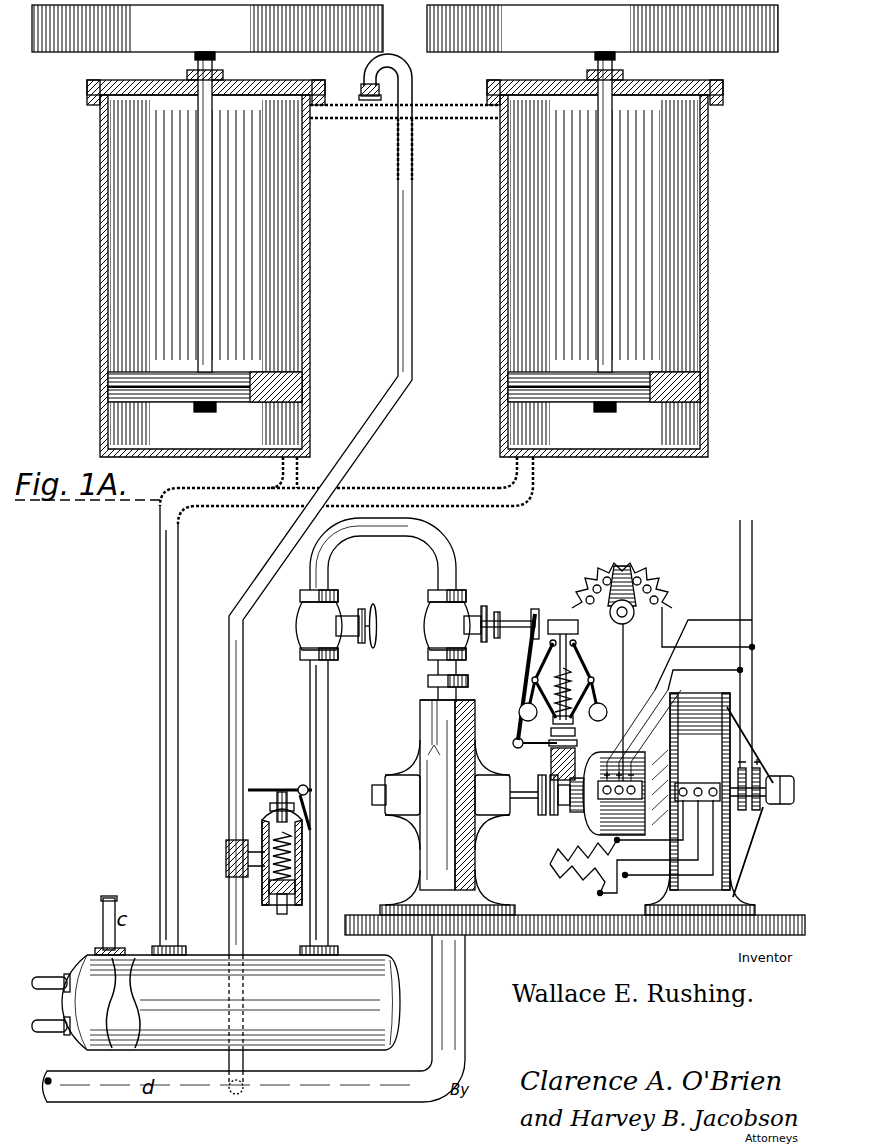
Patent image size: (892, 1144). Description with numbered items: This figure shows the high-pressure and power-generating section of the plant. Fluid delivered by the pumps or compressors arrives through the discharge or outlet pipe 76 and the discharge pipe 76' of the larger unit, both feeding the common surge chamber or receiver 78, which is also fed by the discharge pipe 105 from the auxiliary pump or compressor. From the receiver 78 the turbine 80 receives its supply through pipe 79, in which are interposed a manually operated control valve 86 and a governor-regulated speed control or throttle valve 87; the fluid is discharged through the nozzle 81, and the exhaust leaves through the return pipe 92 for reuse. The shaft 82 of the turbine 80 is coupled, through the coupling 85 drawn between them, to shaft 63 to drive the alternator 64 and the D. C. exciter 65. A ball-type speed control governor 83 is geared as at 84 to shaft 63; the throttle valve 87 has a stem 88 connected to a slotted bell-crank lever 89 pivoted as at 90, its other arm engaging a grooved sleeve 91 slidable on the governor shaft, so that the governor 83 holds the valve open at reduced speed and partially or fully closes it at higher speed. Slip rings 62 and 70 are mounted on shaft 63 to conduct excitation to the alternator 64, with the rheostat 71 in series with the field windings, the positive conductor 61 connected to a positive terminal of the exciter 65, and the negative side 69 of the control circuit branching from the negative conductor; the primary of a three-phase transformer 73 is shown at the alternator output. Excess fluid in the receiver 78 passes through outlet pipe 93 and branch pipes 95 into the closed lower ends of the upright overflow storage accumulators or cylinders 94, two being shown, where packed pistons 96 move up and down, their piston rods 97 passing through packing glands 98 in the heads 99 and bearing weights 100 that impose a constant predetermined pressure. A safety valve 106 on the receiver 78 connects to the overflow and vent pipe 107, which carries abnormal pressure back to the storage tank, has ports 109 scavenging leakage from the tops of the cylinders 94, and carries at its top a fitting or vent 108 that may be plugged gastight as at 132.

The weights 100 is at (245, 36).
The heads 99 is at (178, 92).
The packing glands 98 is at (225, 75).
The piston rods 97 is at (197, 270).
The pistons 96 is at (228, 372).
The overflow storage accumulators or cylinders 94 is at (98, 238).
The branch pipes 95 is at (280, 480).
The connections or ports 109 is at (368, 120).
The fitting or vent 108 is at (415, 72).
The gastight plug 132 is at (366, 88).
The overflow and vent pipe 107 is at (412, 290).
The outlet pipe 93 is at (158, 748).
The pipe 79 is at (460, 555).
The manually operated control valve 86 is at (302, 635).
The speed control or throttle valve 87 is at (430, 628).
The stem 88 is at (534, 610).
The slotted bell-crank lever 89 is at (526, 666).
The pivot 90 is at (513, 745).
The grooved sleeve 91 is at (576, 742).
The speed control governor 83 is at (580, 676).
The gearing 84 is at (550, 764).
The turbine 80 is at (432, 712).
The nozzle 81 is at (468, 712).
The shaft 82 is at (375, 806).
The coupling flange 85 is at (540, 812).
The D. C. generator or exciter 65 is at (592, 814).
The alternator 64 is at (682, 752).
The slip ring 62 is at (756, 766).
The shaft 63 is at (782, 778).
The slip ring 70 is at (752, 828).
The three-phase transformer 73 is at (578, 876).
The rheostat 71 is at (668, 578).
The negative side of the control circuit 69 is at (738, 592).
The positive conductor 61 is at (754, 600).
The safety valve 106 is at (248, 842).
The discharge pipe 105 is at (102, 910).
The surge chamber or receiver 78 is at (150, 990).
The discharge or outlet pipe 76 is at (51, 965).
The discharge pipe 76' is at (48, 1042).
The exhaust or return pipe 92 is at (467, 975).